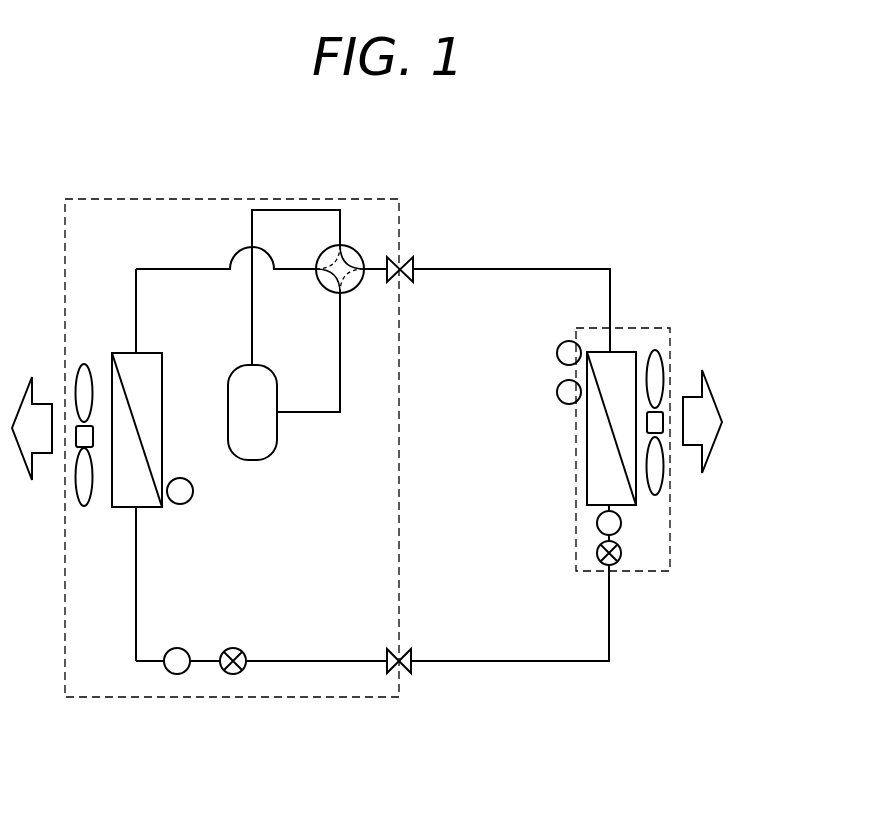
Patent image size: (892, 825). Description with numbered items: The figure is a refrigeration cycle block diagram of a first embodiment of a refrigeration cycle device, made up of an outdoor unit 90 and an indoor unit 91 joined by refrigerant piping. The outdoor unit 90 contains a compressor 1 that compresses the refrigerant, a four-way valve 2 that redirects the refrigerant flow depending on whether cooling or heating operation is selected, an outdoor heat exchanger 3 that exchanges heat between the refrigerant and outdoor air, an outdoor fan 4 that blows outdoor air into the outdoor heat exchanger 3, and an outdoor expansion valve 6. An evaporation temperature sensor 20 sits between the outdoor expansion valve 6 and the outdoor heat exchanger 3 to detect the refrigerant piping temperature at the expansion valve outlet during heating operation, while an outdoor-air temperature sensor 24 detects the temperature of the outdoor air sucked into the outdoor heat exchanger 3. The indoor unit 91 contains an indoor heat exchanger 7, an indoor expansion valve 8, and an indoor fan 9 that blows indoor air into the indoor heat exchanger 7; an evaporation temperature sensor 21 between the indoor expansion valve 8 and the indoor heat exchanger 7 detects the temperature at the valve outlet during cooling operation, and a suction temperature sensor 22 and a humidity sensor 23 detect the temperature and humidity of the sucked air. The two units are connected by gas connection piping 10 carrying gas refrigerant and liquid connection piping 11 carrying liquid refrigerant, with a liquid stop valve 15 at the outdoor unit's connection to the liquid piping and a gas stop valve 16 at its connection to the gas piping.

The compressor 1 is at (232, 370).
The four-way valve 2 is at (352, 248).
The outdoor heat exchanger 3 is at (147, 510).
The outdoor fan 4 is at (84, 507).
The outdoor expansion valve 6 is at (233, 674).
The indoor heat exchanger 7 is at (587, 441).
The indoor expansion valve 8 is at (597, 553).
The indoor fan 9 is at (657, 360).
The gas connection piping 10 is at (515, 269).
The liquid connection piping 11 is at (522, 661).
The liquid stop valve 15 is at (407, 673).
The gas stop valve 16 is at (412, 258).
The evaporation temperature sensor 20 is at (177, 674).
The evaporation temperature sensor 21 is at (597, 523).
The suction temperature sensor 22 is at (557, 390).
The humidity sensor 23 is at (557, 353).
The outdoor-air temperature sensor 24 is at (185, 503).
The outdoor unit 90 is at (353, 697).
The indoor unit 91 is at (657, 571).